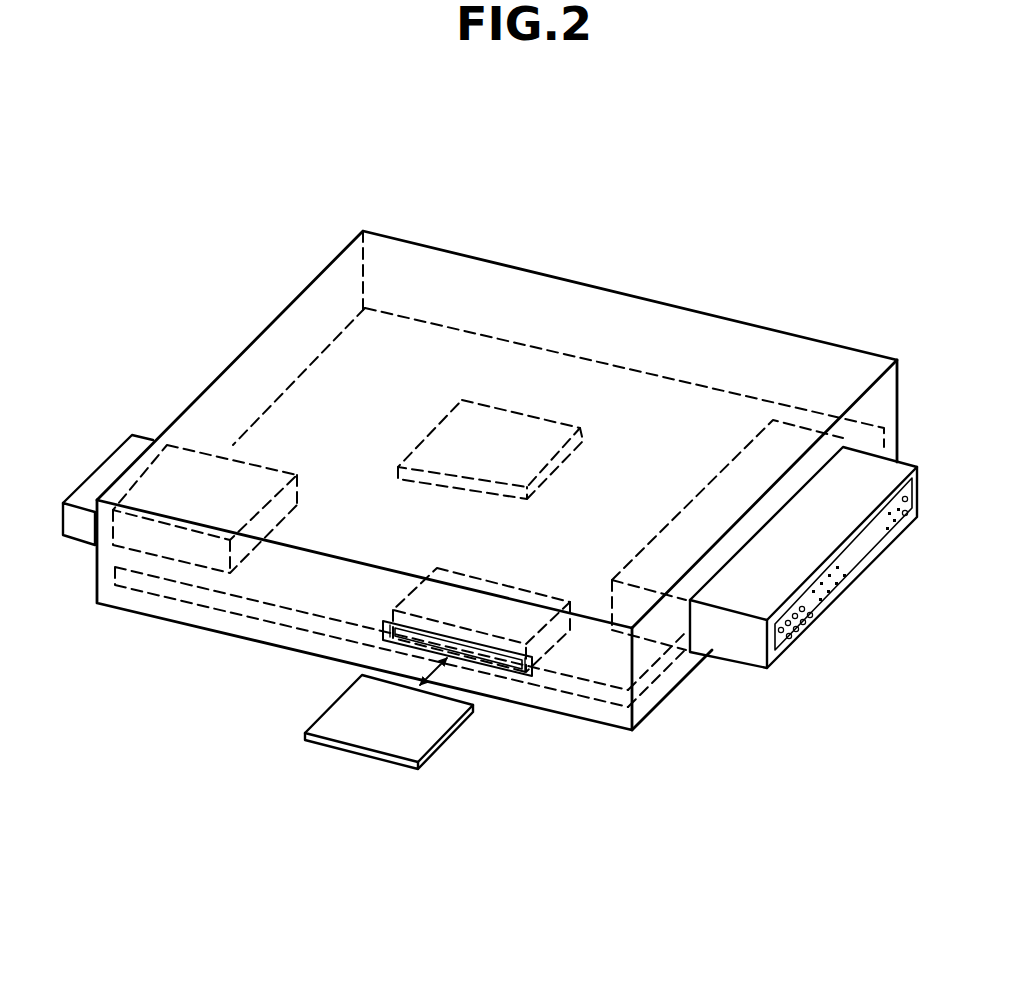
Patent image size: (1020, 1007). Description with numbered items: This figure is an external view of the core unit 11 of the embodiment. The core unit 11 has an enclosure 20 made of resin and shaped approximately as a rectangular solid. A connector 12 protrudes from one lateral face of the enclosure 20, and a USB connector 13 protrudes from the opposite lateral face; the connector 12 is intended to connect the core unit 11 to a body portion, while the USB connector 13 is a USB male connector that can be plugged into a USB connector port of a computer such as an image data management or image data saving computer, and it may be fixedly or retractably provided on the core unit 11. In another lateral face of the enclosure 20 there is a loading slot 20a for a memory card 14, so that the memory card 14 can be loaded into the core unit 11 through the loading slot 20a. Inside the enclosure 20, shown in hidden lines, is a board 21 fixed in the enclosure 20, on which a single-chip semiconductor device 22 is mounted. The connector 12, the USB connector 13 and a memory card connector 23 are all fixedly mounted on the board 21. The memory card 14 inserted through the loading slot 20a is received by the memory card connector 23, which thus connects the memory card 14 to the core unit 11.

The core unit 11 is at (820, 255).
The connector 12 is at (737, 655).
The USB connector 13 is at (118, 458).
The memory card 14 is at (432, 753).
The enclosure 20 is at (866, 352).
The loading slot 20a is at (393, 657).
The board 21 is at (422, 338).
The single-chip semiconductor device 22 is at (495, 423).
The memory card connector 23 is at (558, 698).